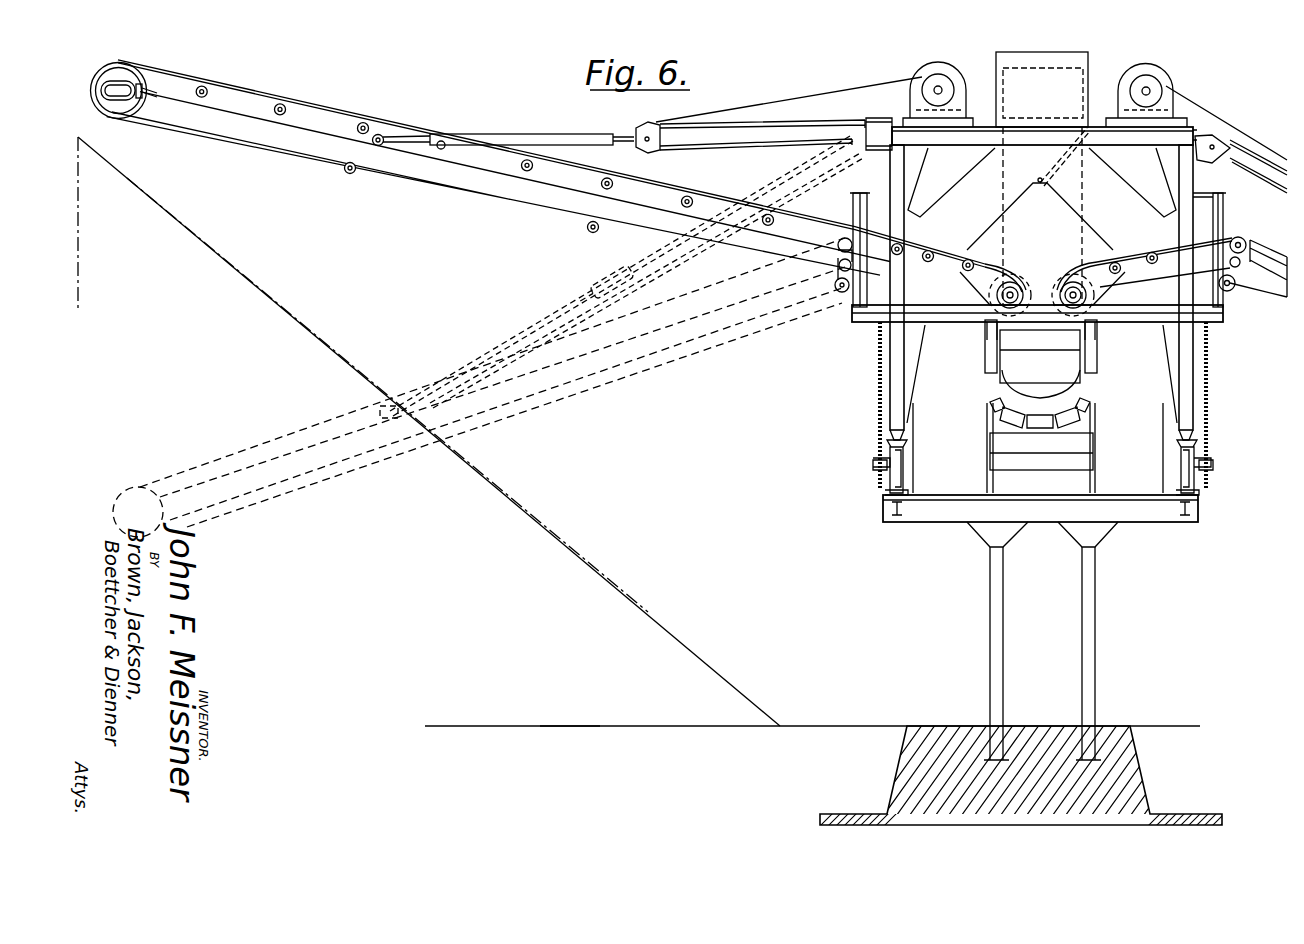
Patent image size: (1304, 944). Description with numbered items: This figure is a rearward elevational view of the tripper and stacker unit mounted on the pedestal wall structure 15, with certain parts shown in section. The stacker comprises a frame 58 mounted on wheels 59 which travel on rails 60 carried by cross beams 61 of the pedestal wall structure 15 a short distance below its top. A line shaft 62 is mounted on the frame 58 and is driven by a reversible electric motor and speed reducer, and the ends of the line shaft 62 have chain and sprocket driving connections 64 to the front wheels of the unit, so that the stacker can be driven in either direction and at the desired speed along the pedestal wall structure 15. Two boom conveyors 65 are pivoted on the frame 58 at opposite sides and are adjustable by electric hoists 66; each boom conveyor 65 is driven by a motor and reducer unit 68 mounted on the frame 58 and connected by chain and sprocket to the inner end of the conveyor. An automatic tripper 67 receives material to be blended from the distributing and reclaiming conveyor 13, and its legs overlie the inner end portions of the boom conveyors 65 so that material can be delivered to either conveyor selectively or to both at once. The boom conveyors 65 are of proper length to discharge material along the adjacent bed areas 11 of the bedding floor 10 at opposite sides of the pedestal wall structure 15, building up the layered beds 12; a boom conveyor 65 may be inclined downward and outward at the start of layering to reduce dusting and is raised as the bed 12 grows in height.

The bedding floor 10 is at (830, 724).
The bed area 11 is at (570, 722).
The bed 12 is at (482, 546).
The distributing and reclaiming conveyor 13 is at (1060, 406).
The pedestal wall structure 15 is at (1085, 620).
The frame 58 is at (890, 366).
The wheels 59 is at (890, 483).
The rails 60 is at (888, 494).
The cross beams 61 is at (915, 515).
The line shaft 62 is at (1160, 322).
The chain and sprocket driving connections 64 is at (878, 408).
The boom conveyor 65 is at (441, 140).
The electric hoist 66 is at (958, 44).
The automatic tripper 67 is at (1075, 70).
The motor and reducer unit 68 is at (1042, 279).